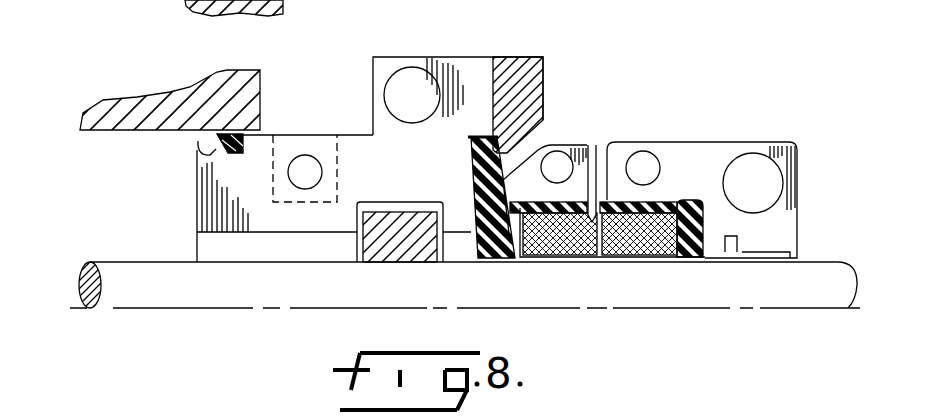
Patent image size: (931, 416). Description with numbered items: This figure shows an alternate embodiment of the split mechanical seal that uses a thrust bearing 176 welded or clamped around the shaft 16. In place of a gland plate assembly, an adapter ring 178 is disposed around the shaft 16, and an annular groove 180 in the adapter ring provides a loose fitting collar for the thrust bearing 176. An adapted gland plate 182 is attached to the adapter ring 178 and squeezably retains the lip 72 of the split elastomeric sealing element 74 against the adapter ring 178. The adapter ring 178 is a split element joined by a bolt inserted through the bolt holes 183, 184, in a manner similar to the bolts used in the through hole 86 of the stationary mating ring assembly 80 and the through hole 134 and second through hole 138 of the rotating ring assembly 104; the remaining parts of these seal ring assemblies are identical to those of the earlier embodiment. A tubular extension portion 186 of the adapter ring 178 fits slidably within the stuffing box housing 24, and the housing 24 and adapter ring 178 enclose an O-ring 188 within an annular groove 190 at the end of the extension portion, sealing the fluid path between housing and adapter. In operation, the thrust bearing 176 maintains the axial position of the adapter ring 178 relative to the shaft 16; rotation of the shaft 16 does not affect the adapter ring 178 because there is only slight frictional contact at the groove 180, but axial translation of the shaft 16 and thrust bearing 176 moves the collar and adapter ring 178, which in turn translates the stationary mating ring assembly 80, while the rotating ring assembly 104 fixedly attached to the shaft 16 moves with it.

The shaft 16 is at (828, 268).
The stuffing box housing 24 is at (167, 91).
The lip 72 is at (469, 150).
The split elastomeric sealing element 74 is at (506, 255).
The stationary mating ring assembly 80 is at (593, 113).
The through hole 86 is at (559, 157).
The rotating ring assembly 104 is at (731, 124).
The through hole 134 is at (652, 160).
The second through hole 138 is at (780, 176).
The thrust bearing 176 is at (401, 244).
The adapter ring 178 is at (430, 50).
The annular groove 180 is at (400, 200).
The adapted gland plate 182 is at (530, 57).
The bolt hole 183 is at (390, 80).
The bolt hole 184 is at (304, 163).
The tubular extension portion 186 is at (208, 208).
The O-ring 188 is at (215, 139).
The annular groove 190 is at (203, 152).